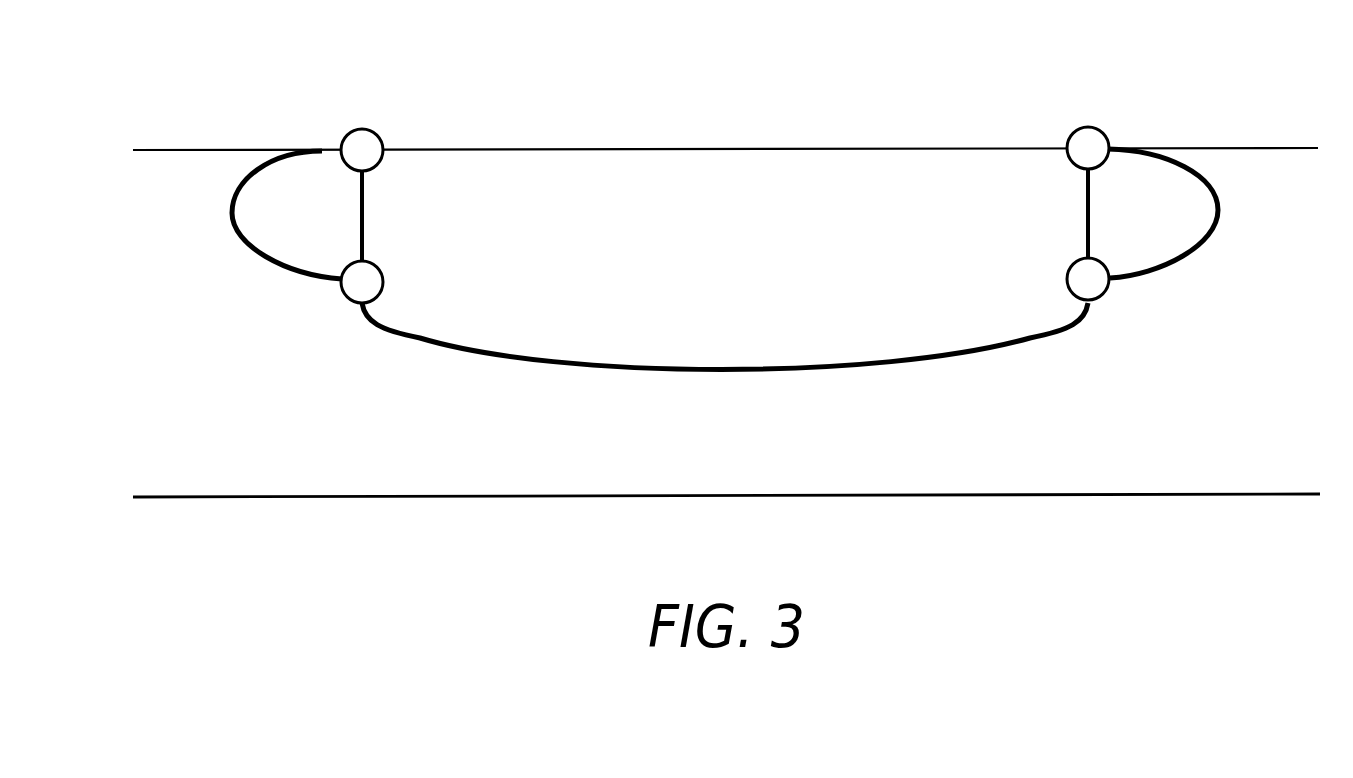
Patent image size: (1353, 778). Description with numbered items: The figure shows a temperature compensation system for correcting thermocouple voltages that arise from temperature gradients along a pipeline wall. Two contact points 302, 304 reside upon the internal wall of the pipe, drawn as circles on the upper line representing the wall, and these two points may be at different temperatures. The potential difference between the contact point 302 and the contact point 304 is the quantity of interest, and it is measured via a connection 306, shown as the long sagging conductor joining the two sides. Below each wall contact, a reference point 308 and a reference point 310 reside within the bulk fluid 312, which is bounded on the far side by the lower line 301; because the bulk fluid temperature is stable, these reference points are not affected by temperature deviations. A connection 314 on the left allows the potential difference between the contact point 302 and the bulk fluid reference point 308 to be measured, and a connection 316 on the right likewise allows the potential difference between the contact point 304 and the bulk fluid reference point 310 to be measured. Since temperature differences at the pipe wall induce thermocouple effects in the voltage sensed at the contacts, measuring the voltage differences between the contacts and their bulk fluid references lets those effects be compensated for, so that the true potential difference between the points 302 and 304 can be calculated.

The lower conductor line 301 is at (1168, 495).
The contact point 302 is at (346, 131).
The contact point 304 is at (1105, 128).
The connection 306 is at (548, 367).
The bulk fluid reference point 308 is at (348, 294).
The bulk fluid reference point 310 is at (1102, 290).
The bulk fluid 312 is at (405, 473).
The connection 314 is at (238, 243).
The connection 316 is at (1213, 237).